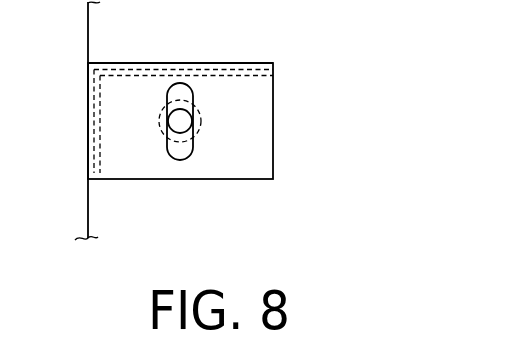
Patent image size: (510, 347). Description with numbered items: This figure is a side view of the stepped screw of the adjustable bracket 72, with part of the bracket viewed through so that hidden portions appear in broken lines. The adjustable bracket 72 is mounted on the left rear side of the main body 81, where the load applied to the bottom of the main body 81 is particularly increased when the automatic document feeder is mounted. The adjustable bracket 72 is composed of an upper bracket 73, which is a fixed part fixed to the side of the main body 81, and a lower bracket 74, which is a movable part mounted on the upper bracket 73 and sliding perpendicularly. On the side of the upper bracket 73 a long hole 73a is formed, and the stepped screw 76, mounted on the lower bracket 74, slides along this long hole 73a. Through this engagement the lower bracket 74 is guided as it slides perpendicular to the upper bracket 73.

The adjustable bracket 72 is at (352, 46).
The upper bracket 73 is at (245, 63).
The long hole 73a is at (191, 93).
The lower bracket 74 is at (245, 76).
The stepped screw 76 is at (200, 127).
The main body 81 is at (89, 21).